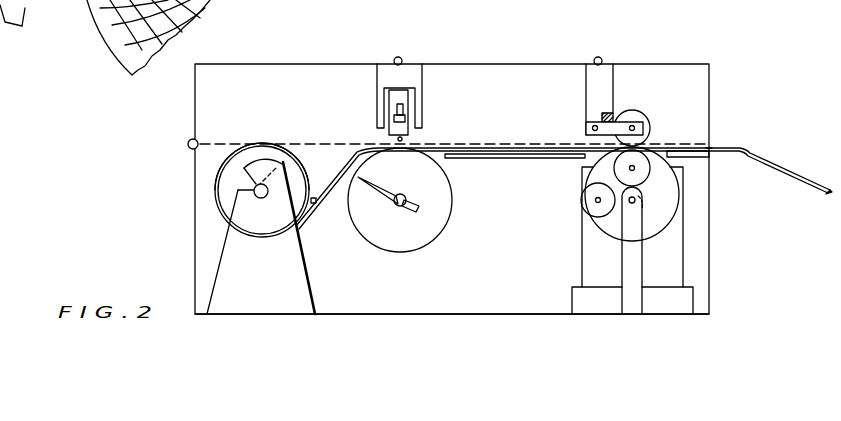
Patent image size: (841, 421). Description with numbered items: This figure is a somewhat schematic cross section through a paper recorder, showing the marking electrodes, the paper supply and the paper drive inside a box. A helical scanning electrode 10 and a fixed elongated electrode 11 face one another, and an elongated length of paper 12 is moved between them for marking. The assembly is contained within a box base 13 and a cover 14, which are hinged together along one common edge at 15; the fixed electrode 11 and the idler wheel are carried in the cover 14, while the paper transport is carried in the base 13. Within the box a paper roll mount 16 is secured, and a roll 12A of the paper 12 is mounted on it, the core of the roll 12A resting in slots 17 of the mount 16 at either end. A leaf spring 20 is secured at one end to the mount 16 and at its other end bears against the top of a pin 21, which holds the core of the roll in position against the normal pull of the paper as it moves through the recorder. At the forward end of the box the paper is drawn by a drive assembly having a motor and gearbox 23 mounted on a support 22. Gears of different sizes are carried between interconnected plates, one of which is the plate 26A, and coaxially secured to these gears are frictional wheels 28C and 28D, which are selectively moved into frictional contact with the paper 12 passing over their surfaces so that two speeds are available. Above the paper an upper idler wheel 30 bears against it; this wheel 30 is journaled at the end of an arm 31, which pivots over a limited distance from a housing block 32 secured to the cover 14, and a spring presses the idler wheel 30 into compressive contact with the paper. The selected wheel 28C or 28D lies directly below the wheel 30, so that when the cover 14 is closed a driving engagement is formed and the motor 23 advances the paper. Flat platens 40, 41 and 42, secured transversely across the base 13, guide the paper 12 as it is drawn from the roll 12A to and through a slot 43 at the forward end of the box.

The helical scanning electrode 10 is at (366, 182).
The fixed elongated electrode 11 is at (403, 140).
The paper 12 is at (336, 152).
The paper roll 12A is at (268, 147).
The box base 13 is at (338, 318).
The cover 14 is at (483, 63).
The hinge 15 is at (189, 141).
The paper roll mount 16 is at (252, 297).
The slots 17 is at (252, 188).
The leaf spring 20 is at (290, 178).
The pin 21 is at (258, 185).
The support 22 is at (572, 300).
The motor and gearbox 23 is at (685, 253).
The plate 26A is at (605, 248).
The frictional wheel 28C is at (645, 182).
The frictional wheel 28D is at (595, 215).
The upper idler wheel 30 is at (648, 117).
The arm 31 is at (586, 128).
The housing block 32 is at (615, 88).
The platen 40 is at (550, 160).
The platen 41 is at (314, 204).
The platen 42 is at (693, 157).
The slot 43 is at (712, 147).